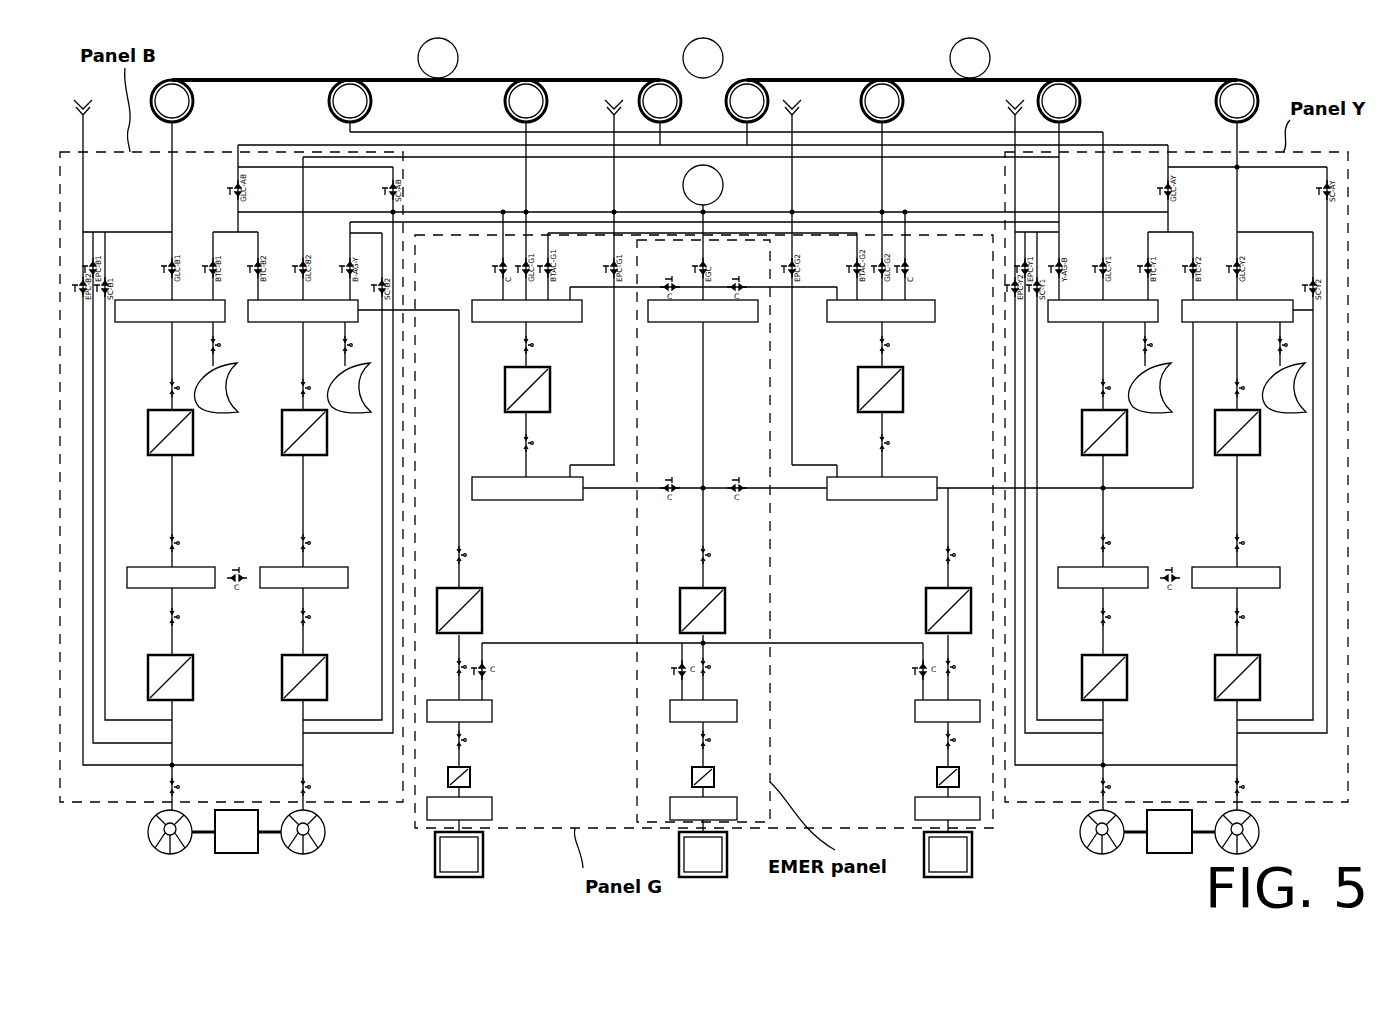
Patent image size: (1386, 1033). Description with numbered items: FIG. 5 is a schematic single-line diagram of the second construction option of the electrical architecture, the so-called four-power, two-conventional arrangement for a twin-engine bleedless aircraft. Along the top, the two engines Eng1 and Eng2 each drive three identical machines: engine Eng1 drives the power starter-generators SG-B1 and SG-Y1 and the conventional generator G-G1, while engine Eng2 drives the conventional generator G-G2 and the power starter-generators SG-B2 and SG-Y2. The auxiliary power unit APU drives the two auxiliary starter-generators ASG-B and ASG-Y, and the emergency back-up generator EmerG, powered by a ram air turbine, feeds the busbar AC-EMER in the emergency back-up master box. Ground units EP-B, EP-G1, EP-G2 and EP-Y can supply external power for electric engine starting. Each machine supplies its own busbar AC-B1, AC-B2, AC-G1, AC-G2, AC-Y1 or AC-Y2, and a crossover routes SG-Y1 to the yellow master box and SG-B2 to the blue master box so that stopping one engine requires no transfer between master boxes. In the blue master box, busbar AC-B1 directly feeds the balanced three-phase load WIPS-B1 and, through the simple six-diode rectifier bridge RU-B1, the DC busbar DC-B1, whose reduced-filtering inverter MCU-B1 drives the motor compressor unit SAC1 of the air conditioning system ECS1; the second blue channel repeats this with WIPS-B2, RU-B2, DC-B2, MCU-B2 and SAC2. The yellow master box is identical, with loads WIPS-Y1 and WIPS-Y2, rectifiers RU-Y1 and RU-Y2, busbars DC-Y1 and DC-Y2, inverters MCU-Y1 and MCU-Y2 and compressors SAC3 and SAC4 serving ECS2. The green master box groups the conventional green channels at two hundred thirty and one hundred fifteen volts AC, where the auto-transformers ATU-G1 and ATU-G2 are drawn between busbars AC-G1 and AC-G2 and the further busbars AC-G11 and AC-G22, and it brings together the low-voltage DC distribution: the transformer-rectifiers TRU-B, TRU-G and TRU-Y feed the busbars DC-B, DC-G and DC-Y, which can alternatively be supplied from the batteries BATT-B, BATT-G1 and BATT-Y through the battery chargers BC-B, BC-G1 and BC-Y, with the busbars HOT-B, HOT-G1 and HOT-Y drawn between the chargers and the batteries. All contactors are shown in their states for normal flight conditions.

The ground unit EP-B is at (83, 102).
The ground unit EP-G1 is at (614, 102).
The ground unit EP-G2 is at (792, 102).
The ground unit EP-Y is at (1015, 102).
The engine Eng1 is at (438, 58).
The engine Eng2 is at (970, 58).
The auxiliary power unit APU is at (703, 58).
The emergency back-up generator EmerG is at (703, 185).
The power starter-generator SG-B1 is at (172, 101).
The power starter-generator SG-Y1 is at (350, 101).
The conventional generator G-G1 is at (526, 101).
The auxiliary starter-generator ASG-B is at (660, 101).
The auxiliary starter-generator ASG-Y is at (747, 101).
The conventional generator G-G2 is at (882, 101).
The power starter-generator SG-B2 is at (1059, 101).
The power starter-generator SG-Y2 is at (1237, 101).
The primary busbar AC-B1 is at (170, 311).
The primary busbar AC-B2 is at (303, 311).
The busbar AC-G1 is at (527, 311).
The emergency busbar AC-EMER is at (703, 311).
The busbar AC-G2 is at (881, 311).
The primary busbar AC-Y1 is at (1103, 311).
The primary busbar AC-Y2 is at (1237, 311).
The AC bus G11 AC-G11 is at (527, 488).
The AC bus G22 AC-G22 is at (882, 488).
The balanced three-phase load WIPS-B1 is at (216, 388).
The balanced three-phase load WIPS-B2 is at (349, 388).
The balanced three-phase load WIPS-Y1 is at (1150, 388).
The balanced three-phase load WIPS-Y2 is at (1284, 388).
The six-diode rectifier bridge RU-B1 is at (170, 432).
The six-diode rectifier bridge RU-B2 is at (304, 432).
The six-diode rectifier bridge RU-Y1 is at (1104, 432).
The six-diode rectifier bridge RU-Y2 is at (1237, 432).
The auto-transformer ATU-G1 is at (527, 389).
The auto-transformer ATU-G2 is at (880, 389).
The transformer-rectifier TRU-B is at (459, 610).
The transformer-rectifier TRU-G is at (702, 610).
The transformer-rectifier TRU-Y is at (948, 610).
The reduced filtering inverter MCU-B1 is at (170, 677).
The reduced filtering inverter MCU-B2 is at (304, 677).
The reduced filtering inverter MCU-Y1 is at (1104, 677).
The reduced filtering inverter MCU-Y2 is at (1237, 677).
The DC busbar DC-B1 is at (171, 577).
The DC busbar DC-B2 is at (304, 577).
The DC busbar DC-Y1 is at (1103, 577).
The DC busbar DC-Y2 is at (1236, 577).
The DC busbar DC-B is at (459, 711).
The DC busbar DC-G is at (703, 711).
The DC busbar DC-Y is at (947, 711).
The battery charger BC-B is at (459, 777).
The battery charger BC-G1 is at (703, 777).
The battery charger BC-Y is at (948, 777).
The hot battery bus B HOT-B is at (459, 808).
The hot battery bus G1 HOT-G1 is at (703, 808).
The hot battery bus Y HOT-Y is at (947, 808).
The battery BATT-B is at (459, 854).
The battery BATT-G1 is at (703, 854).
The battery BATT-Y is at (948, 854).
The motor compressor unit SAC1 is at (170, 832).
The motor compressor unit SAC2 is at (303, 832).
The motor compressor unit SAC3 is at (1102, 832).
The motor compressor unit SAC4 is at (1237, 832).
The air conditioning system ECS1 is at (236, 831).
The air conditioning system ECS2 is at (1169, 831).